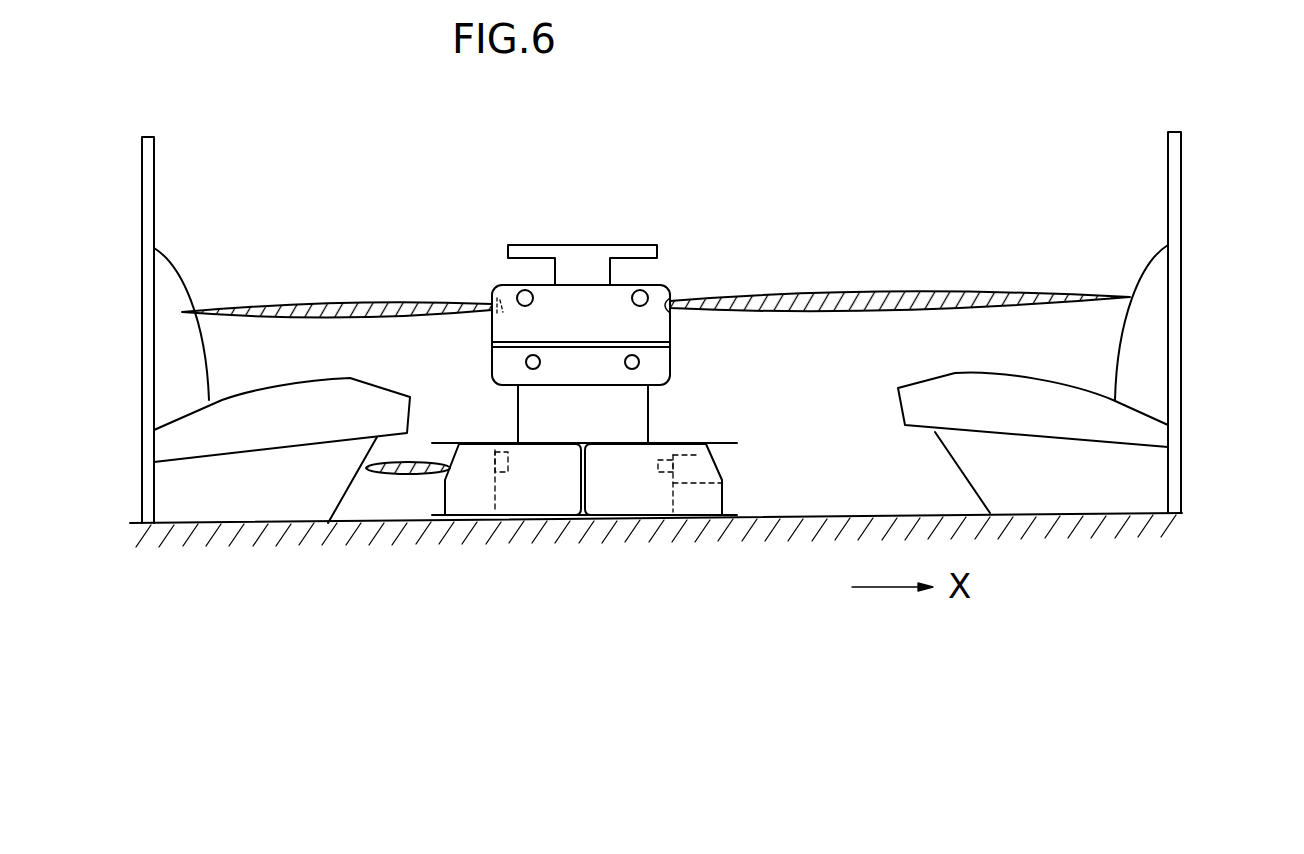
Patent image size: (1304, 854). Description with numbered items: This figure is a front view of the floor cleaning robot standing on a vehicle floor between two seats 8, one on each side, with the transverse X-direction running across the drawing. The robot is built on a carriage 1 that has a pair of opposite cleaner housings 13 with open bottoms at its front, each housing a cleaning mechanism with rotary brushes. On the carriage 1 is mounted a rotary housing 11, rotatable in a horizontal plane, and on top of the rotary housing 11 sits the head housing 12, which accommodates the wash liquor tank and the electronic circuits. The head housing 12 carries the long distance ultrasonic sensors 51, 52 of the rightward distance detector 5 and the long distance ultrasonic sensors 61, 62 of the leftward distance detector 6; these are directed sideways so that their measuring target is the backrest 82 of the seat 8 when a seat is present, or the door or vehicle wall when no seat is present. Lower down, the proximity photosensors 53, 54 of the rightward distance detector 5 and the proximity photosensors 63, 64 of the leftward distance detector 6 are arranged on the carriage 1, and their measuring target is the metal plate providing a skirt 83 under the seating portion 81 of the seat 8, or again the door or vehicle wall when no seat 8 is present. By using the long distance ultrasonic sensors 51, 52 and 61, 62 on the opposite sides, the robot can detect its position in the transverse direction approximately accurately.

The carriage 1 is at (708, 443).
The rightward distance detector 5 is at (337, 265).
The leftward distance detector 6 is at (900, 278).
The seat 8 is at (82, 474).
The rotary housing 11 is at (653, 415).
The head housing 12 is at (605, 307).
The cleaner housing 13 is at (531, 487).
The long distance ultrasonic sensor 51 is at (337, 333).
The long distance ultrasonic sensor 52 is at (488, 327).
The proximity photosensor 53 is at (449, 449).
The proximity photosensor 54 is at (493, 448).
The long distance ultrasonic sensor 61 is at (900, 324).
The long distance ultrasonic sensor 62 is at (672, 323).
The proximity photosensor 63 is at (760, 483).
The proximity photosensor 64 is at (722, 478).
The seating portion 81 is at (205, 435).
The backrest 82 is at (166, 362).
The skirt 83 is at (195, 492).